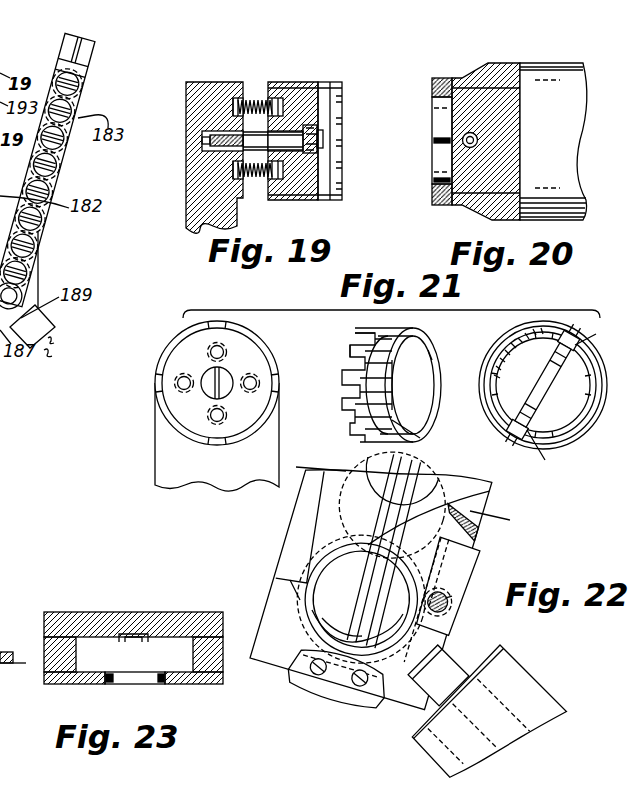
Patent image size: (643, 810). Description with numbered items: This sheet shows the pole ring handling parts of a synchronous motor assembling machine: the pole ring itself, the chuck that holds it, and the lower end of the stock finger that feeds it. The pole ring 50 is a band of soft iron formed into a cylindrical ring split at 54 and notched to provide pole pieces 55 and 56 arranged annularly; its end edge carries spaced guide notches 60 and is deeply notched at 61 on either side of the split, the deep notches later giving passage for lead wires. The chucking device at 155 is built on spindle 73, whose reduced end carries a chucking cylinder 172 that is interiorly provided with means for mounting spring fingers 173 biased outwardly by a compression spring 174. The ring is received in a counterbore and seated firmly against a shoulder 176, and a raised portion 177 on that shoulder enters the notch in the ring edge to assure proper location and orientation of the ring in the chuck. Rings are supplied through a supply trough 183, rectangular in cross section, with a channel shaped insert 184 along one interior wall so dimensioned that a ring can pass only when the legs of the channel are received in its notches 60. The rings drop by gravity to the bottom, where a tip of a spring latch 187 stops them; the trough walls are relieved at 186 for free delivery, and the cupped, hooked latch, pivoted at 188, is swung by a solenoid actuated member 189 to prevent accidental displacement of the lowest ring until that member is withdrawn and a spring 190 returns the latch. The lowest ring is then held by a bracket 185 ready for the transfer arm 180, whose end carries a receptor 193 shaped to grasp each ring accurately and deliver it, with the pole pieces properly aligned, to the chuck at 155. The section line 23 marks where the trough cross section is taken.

In FIG. 22, the section line 23— 23 is at (305, 469).
In FIG. 21, the pole ring 50 is at (394, 387).
In FIG. 22, the pole ring 50 is at (307, 608).
In FIG. 21, the split 54 is at (392, 421).
In FIG. 21, the pole pieces 55 is at (350, 350).
In FIG. 21, the pole pieces 56 is at (358, 334).
In FIG. 21, the guide notches 60 is at (432, 362).
In FIG. 21, the deep notches 61 is at (384, 448).
In FIG. 20, the spindle 73 is at (567, 85).
In FIG. 20, the chucking device 155 is at (497, 132).
In FIG. 21, the chucking device 155 is at (556, 396).
In FIG. 20, the chucking cylinder 172 is at (502, 68).
In FIG. 21, the chucking cylinder 172 is at (497, 420).
In FIG. 20, the spring fingers 173 is at (446, 141).
In FIG. 21, the spring fingers 173 is at (590, 464).
In FIG. 20, the compression spring 174 is at (465, 145).
In FIG. 20, the shoulder 176 is at (443, 78).
In FIG. 21, the shoulder 176 is at (602, 367).
In FIG. 20, the raised portion 177 is at (443, 195).
In FIG. 21, the raised portion 177 is at (598, 418).
In FIG. 19, the transfer arm 180 is at (186, 207).
In FIG. 21, the transfer arm 180 is at (172, 450).
In FIG. 22, the supply trough 183 is at (291, 548).
In FIG. 23, the supply trough 183 is at (79, 616).
In FIG. 22, the channel shaped insert 184 is at (357, 573).
In FIG. 23, the channel shaped insert 184 is at (136, 631).
In FIG. 22, the bracket 185 is at (302, 667).
In FIG. 22, the relieved portion 186 is at (287, 584).
In FIG. 22, the spring latch 187 is at (378, 639).
In FIG. 22, the pivot 188 is at (452, 609).
In FIG. 22, the solenoid actuated member 189 is at (441, 666).
In FIG. 22, the spring 190 is at (457, 597).
In FIG. 19, the receptor 193 is at (331, 73).
In FIG. 21, the receptor 193 is at (157, 380).